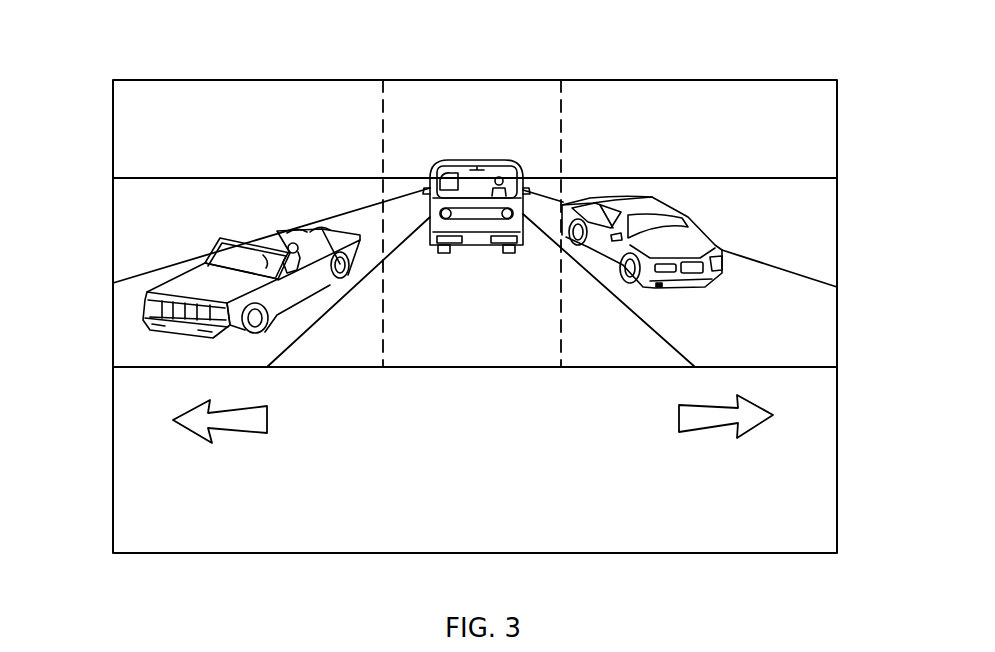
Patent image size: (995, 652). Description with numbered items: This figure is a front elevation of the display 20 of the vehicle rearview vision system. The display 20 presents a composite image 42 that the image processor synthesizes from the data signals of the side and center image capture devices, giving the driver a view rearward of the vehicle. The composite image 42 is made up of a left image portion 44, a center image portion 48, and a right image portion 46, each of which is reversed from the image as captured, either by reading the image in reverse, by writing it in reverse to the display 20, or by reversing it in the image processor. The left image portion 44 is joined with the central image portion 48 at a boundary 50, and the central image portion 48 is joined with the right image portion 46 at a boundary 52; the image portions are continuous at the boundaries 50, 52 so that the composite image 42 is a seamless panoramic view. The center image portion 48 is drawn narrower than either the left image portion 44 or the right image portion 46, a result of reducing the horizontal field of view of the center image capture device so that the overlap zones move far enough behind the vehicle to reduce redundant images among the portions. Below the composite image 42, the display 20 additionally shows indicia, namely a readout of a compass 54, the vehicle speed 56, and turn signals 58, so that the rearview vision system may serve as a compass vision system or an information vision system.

The display 20 is at (838, 103).
The composite image 42 is at (840, 248).
The left image portion 44 is at (218, 141).
The right image portion 46 is at (685, 141).
The center image portion 48 is at (461, 141).
The boundary 50 is at (383, 123).
The boundary 52 is at (561, 118).
The compass 54 is at (460, 513).
The vehicle speed 56 is at (527, 475).
The turn signals 58 is at (190, 423).